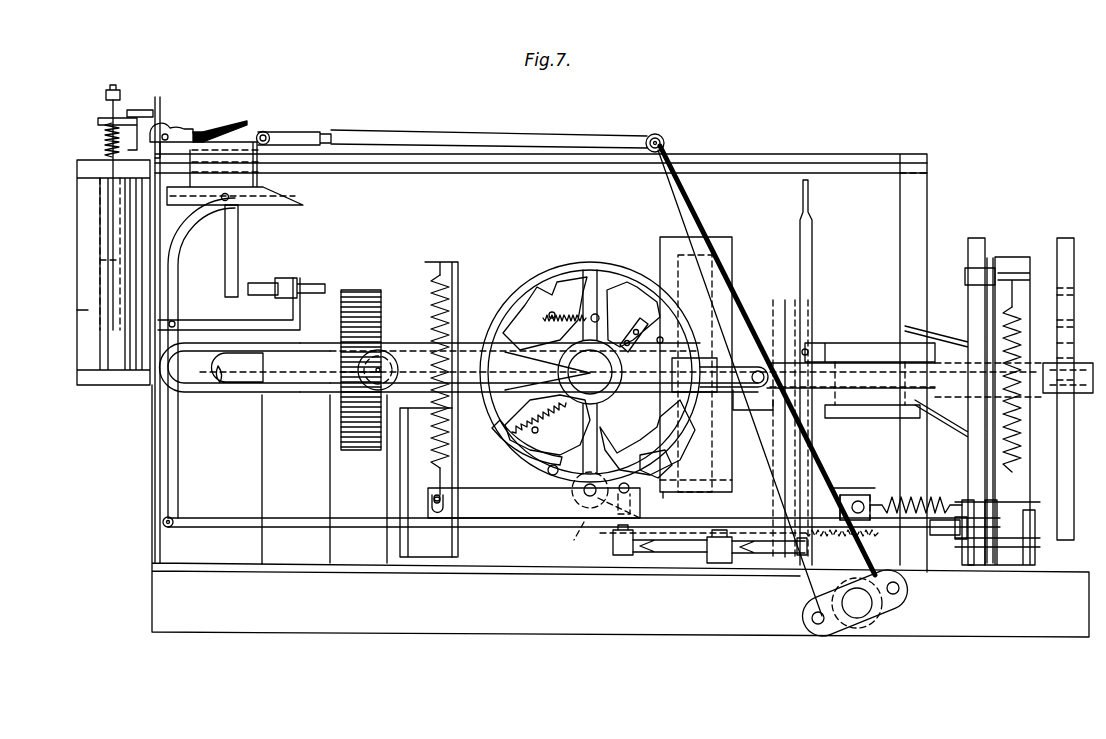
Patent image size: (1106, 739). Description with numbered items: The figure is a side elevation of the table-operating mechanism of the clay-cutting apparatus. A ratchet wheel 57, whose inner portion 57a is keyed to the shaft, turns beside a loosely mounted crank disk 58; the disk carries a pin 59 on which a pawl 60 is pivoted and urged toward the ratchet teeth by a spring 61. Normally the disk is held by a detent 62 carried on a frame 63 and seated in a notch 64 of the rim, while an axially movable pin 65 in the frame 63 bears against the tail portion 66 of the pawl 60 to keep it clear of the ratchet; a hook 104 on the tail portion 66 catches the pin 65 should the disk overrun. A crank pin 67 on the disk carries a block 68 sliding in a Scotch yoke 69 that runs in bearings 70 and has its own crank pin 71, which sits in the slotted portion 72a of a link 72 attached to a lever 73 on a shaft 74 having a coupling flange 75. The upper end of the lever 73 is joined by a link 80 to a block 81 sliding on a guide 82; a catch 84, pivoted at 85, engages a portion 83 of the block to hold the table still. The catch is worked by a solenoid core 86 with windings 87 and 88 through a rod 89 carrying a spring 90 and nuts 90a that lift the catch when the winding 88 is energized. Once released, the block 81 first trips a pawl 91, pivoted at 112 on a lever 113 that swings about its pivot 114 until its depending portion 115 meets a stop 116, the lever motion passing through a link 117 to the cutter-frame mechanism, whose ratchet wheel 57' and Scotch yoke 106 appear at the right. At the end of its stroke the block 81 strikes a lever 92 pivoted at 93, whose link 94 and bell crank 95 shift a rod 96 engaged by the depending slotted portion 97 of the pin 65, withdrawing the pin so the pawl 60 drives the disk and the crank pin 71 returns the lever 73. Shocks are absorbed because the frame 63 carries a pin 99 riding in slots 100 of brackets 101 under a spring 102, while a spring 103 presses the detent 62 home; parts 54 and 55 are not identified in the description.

The gear 54 is at (362, 290).
The cam 55 is at (520, 290).
The ratchet wheel 57 is at (647, 437).
The inner portion 57a is at (612, 326).
The ratchet wheel 57' is at (950, 401).
The crank disk 58 is at (593, 262).
The pin 59 is at (550, 476).
The pawl 60 is at (515, 445).
The spring 61 is at (547, 425).
The detent 62 is at (598, 524).
The frame 63 is at (534, 503).
The notch 64 is at (583, 494).
The pin 65 is at (628, 494).
The tail portion 66 is at (658, 470).
The crank pin 67 is at (690, 392).
The block 68 is at (733, 396).
The Scotch yoke 69 is at (733, 244).
The bearings 70 is at (405, 470).
The crank pin 71 is at (388, 352).
The link 72 is at (760, 366).
The slotted portion 72a is at (207, 394).
The lever 73 is at (700, 208).
The shaft 74 is at (857, 618).
The coupling flange 75 is at (824, 628).
The link 80 is at (465, 135).
The block 81 is at (245, 140).
The guide 82 is at (422, 166).
The portion 83 is at (200, 131).
The catch 84 is at (228, 125).
The pivot 85 is at (170, 130).
The core 86 is at (100, 247).
The winding 87 is at (88, 207).
The winding 88 is at (88, 323).
The rod 89 is at (108, 110).
The spring 90 is at (105, 143).
The nuts 90a is at (104, 92).
The pawl 91 is at (277, 192).
The lever 92 is at (812, 232).
The pivot 93 is at (810, 350).
The link 94 is at (758, 554).
The bell crank 95 is at (690, 553).
The rod 96 is at (623, 556).
The depending slotted portion 97 is at (612, 535).
The pin 99 is at (859, 500).
The slots 100 is at (847, 494).
The brackets 101 is at (872, 498).
The spring 102 is at (933, 500).
The spring 103 is at (432, 300).
The hook 104 is at (668, 476).
The Scotch yoke 106 is at (1066, 242).
The pivot 112 is at (222, 201).
The lever 113 is at (178, 268).
The pivot 114 is at (183, 321).
The depending portion 115 is at (238, 250).
The stop 116 is at (262, 285).
The link 117 is at (233, 528).